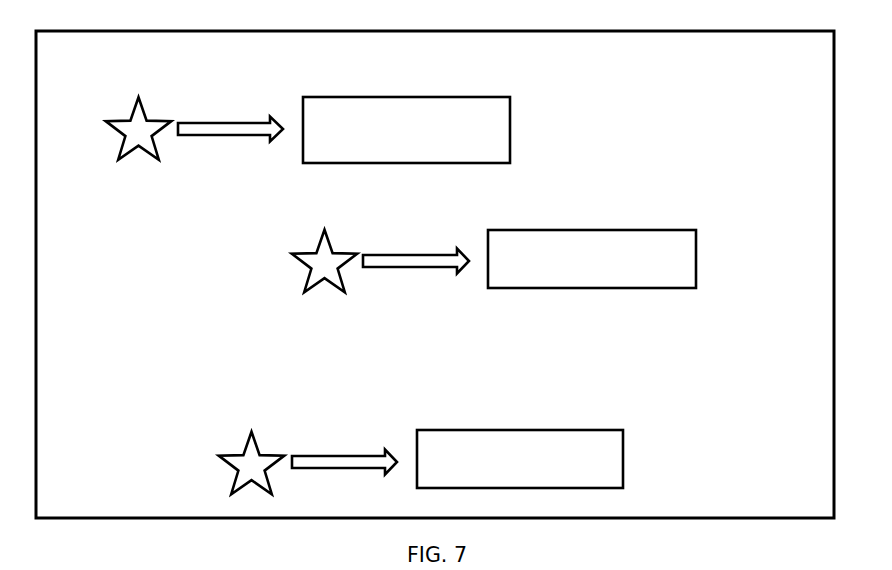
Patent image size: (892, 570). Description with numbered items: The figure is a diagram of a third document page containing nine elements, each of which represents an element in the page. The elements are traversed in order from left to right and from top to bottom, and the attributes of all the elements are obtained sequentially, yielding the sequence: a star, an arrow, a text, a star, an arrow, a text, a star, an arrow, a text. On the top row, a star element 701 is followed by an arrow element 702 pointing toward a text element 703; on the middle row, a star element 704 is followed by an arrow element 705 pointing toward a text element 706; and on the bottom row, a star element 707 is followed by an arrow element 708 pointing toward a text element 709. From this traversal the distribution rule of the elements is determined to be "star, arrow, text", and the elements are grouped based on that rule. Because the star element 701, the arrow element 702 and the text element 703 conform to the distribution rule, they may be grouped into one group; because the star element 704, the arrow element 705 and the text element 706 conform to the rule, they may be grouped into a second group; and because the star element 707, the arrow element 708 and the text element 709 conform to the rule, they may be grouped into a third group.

The star element 701 is at (133, 97).
The arrow element 702 is at (222, 122).
The text element 703 is at (490, 97).
The star element 704 is at (316, 230).
The arrow element 705 is at (403, 255).
The text element 706 is at (672, 230).
The star element 707 is at (253, 432).
The arrow element 708 is at (335, 455).
The text element 709 is at (610, 430).